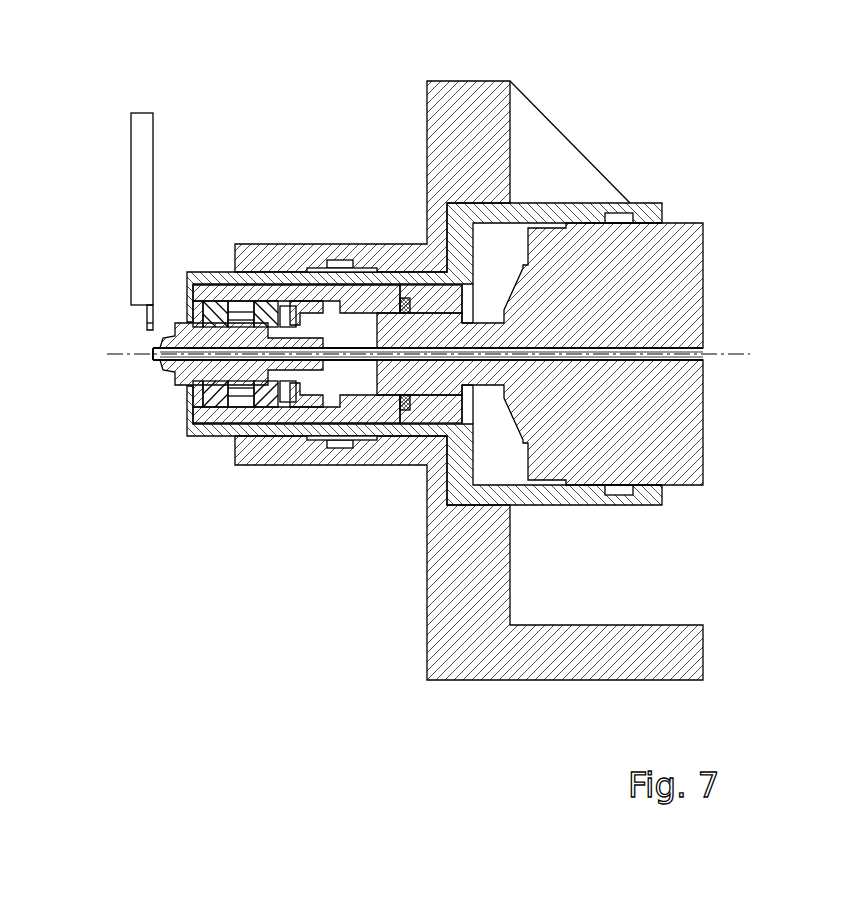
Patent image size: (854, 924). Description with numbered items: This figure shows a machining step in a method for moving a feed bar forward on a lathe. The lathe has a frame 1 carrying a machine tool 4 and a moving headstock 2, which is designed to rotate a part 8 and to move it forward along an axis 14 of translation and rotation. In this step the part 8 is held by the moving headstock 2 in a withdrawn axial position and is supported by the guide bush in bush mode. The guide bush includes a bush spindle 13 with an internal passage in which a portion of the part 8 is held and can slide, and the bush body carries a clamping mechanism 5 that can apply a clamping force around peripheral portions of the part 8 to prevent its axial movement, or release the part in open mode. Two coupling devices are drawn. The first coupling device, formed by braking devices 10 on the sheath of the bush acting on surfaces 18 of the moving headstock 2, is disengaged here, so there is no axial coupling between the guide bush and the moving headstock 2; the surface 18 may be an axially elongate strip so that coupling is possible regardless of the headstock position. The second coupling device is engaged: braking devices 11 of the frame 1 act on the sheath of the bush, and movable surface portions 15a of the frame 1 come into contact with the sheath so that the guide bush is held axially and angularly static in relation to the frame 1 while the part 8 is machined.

The frame 1 is at (447, 138).
The moving headstock 2 is at (670, 268).
The machine tool 4 is at (140, 205).
The clamping mechanism 5 is at (165, 368).
The part 8 is at (703, 362).
The braking device 10 is at (622, 214).
The braking device 11 is at (340, 261).
The bush spindle 13 is at (215, 400).
The axis 14 is at (732, 352).
The surface portions 15a is at (370, 266).
The surface 18 is at (598, 220).